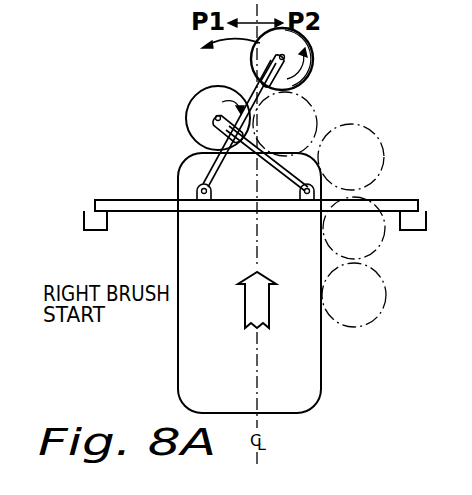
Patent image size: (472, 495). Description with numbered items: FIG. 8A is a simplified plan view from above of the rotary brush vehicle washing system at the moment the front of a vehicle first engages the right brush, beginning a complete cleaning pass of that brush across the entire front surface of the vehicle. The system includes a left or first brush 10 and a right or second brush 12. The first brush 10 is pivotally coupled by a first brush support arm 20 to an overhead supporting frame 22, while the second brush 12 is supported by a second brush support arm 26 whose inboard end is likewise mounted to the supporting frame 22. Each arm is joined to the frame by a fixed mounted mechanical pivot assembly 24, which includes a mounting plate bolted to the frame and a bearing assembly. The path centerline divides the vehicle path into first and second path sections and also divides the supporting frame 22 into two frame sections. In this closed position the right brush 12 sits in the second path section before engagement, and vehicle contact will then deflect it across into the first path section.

The first brush 10 is at (314, 45).
The second brush 12 is at (193, 100).
The first brush support arm 20 is at (187, 151).
The supporting frame 22 is at (163, 180).
The pivot assembly 24 is at (198, 197).
The second brush support arm 26 is at (272, 166).